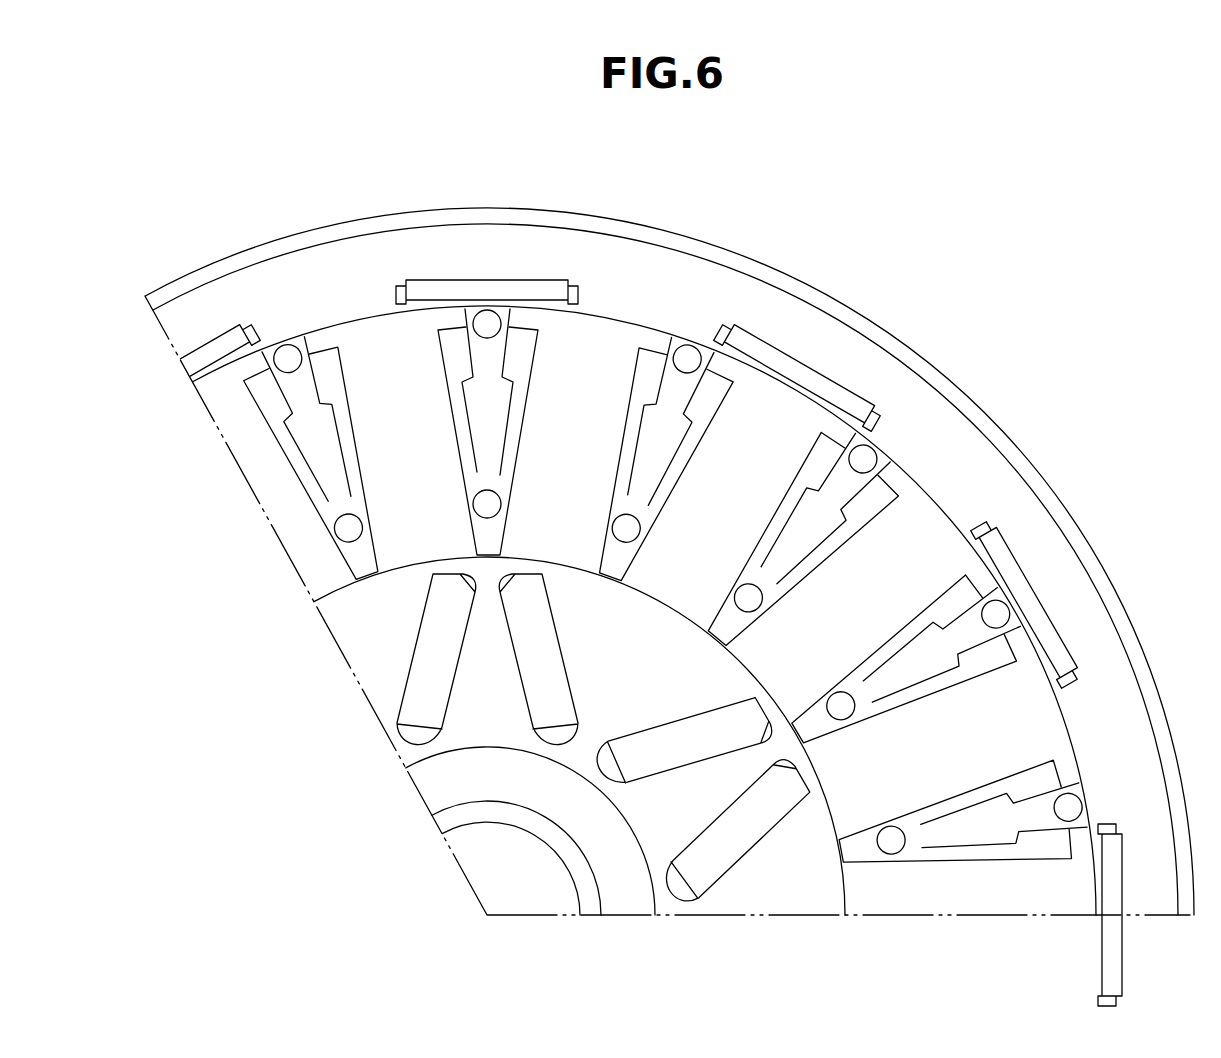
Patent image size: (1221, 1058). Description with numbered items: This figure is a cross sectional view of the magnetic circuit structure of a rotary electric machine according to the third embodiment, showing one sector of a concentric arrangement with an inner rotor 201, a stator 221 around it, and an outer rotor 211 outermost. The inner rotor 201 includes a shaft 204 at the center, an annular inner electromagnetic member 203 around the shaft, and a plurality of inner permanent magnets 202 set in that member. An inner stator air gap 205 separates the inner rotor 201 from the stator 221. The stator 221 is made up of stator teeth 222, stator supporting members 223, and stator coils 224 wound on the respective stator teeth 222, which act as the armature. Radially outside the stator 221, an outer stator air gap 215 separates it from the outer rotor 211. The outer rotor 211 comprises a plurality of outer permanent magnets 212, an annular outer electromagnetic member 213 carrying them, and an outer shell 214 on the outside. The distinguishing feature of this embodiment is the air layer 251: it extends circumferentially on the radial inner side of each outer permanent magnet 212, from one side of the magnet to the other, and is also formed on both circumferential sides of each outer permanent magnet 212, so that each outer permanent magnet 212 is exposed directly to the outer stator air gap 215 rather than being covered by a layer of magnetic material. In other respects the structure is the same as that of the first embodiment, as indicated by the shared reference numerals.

The inner rotor 201 is at (362, 642).
The inner permanent magnets 202 is at (423, 677).
The annular inner electromagnetic member 203 is at (417, 752).
The shaft 204 is at (437, 783).
The inner stator air gap 205 is at (317, 603).
The outer rotor 211 is at (183, 325).
The outer permanent magnets 212 is at (220, 343).
The annular outer electromagnetic member 213 is at (330, 272).
The outer shell 214 is at (148, 306).
The outer stator air gap 215 is at (231, 362).
The stator 221 is at (270, 490).
The stator teeth 222 is at (912, 537).
The stator supporting members 223 is at (745, 600).
The stator coils 224 is at (820, 457).
The air layer 251 is at (582, 296).